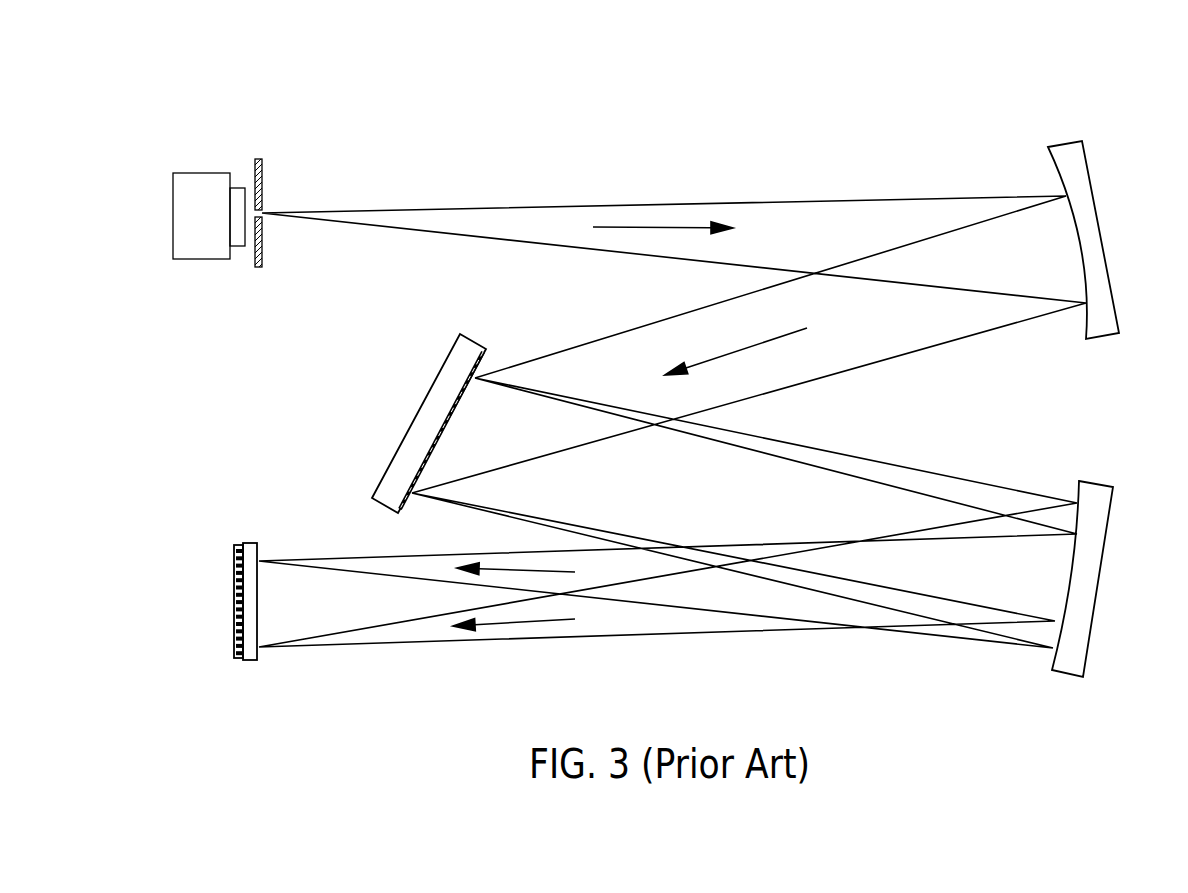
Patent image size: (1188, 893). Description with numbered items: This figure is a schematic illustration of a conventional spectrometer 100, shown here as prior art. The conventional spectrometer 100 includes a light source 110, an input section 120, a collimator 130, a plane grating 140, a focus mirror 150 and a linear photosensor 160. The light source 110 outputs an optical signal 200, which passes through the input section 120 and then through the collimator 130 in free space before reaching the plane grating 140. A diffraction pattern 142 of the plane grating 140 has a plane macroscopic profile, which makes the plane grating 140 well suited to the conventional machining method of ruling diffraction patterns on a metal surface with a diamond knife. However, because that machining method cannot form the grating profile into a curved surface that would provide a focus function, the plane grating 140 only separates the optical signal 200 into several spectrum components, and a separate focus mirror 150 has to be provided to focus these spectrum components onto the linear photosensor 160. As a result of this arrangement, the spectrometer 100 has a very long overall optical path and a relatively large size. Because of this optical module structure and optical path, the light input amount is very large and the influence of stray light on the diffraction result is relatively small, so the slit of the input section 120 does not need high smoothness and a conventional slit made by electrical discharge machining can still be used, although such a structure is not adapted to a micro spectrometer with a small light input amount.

The conventional spectrometer 100 is at (627, 149).
The light source 110 is at (186, 176).
The input section 120 is at (260, 158).
The collimator 130 is at (1072, 148).
The plane grating 140 is at (420, 425).
The diffraction pattern 142 is at (445, 428).
The focus mirror 150 is at (1100, 490).
The linear photosensor 160 is at (247, 662).
The optical signal 200 is at (438, 208).